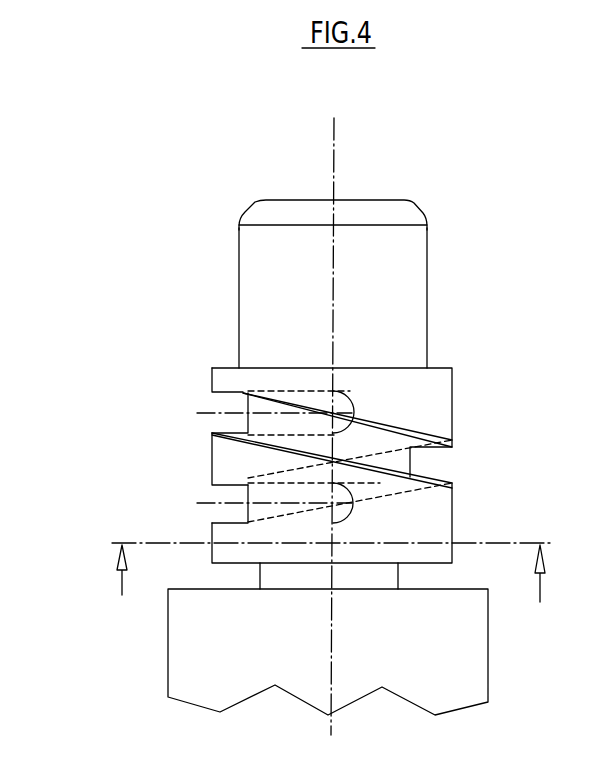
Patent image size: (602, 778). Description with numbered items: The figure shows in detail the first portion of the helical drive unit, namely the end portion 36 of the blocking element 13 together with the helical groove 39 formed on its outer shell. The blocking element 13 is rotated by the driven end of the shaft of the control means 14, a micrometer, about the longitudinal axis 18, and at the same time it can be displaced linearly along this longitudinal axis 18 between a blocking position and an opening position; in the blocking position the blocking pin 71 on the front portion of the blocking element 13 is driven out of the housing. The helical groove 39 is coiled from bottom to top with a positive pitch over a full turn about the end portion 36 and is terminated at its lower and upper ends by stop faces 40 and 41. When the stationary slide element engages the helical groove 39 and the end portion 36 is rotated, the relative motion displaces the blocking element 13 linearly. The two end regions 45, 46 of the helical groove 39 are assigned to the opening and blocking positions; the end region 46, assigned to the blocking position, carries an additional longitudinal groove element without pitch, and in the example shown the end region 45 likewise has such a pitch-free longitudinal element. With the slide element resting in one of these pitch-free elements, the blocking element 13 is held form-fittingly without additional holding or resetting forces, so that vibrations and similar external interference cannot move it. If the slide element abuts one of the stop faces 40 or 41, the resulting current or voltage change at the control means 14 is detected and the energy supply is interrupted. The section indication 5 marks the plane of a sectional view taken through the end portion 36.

The blocking element 13 is at (258, 200).
The blocking pin 71 is at (277, 287).
The longitudinal axis 18 is at (335, 183).
The end region 45 is at (317, 400).
The stop face 40 is at (350, 400).
The helical groove 39 is at (438, 462).
The end portion 36 is at (427, 522).
The end region 46 is at (310, 518).
The control means 14 is at (190, 668).
The stop face 41 is at (347, 517).
The section line V-V 5 is at (329, 583).